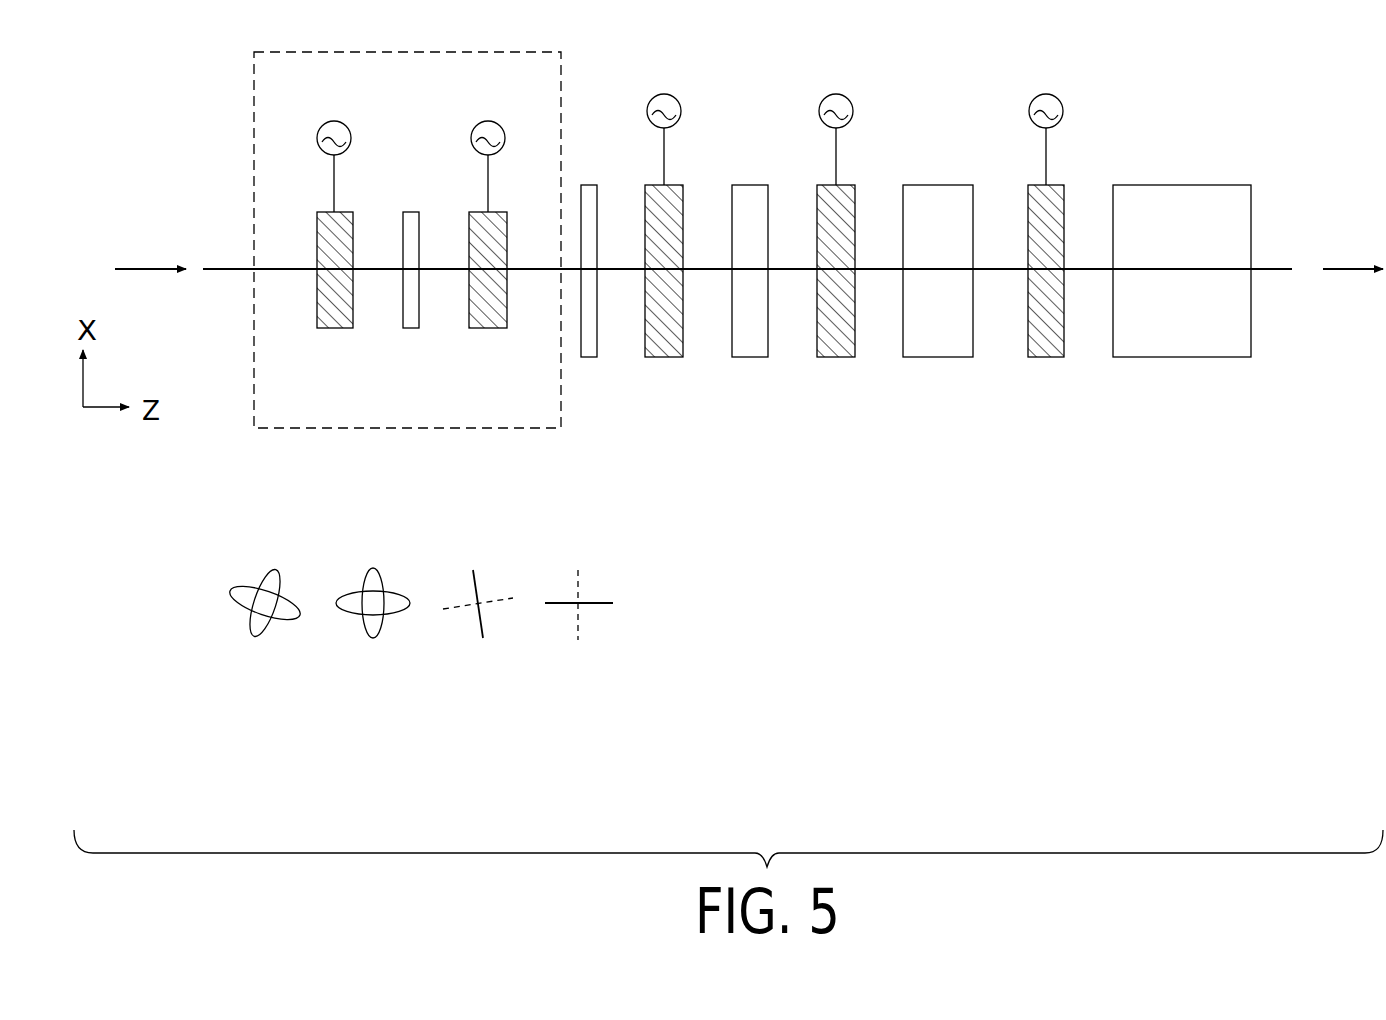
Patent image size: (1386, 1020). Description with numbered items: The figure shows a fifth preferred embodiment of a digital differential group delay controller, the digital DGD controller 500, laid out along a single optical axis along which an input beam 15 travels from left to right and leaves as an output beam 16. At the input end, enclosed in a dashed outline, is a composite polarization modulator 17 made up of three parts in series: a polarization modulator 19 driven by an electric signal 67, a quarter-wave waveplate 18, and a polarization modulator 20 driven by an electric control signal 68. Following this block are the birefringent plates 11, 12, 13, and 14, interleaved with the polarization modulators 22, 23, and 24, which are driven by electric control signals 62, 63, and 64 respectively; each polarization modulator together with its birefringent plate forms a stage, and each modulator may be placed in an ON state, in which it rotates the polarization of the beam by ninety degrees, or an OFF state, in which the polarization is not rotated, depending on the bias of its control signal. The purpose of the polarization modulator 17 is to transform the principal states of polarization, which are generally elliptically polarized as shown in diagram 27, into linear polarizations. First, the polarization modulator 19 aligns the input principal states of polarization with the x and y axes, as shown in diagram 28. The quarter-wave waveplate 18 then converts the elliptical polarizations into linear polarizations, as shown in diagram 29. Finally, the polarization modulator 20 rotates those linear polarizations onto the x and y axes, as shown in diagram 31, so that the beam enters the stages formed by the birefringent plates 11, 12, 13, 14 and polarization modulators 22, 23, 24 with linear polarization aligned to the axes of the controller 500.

The birefringent plate 11 is at (588, 183).
The birefringent plate 12 is at (750, 183).
The birefringent plate 13 is at (938, 183).
The birefringent plate 14 is at (1178, 183).
The input beam 15 is at (143, 268).
The output light 16 is at (1352, 268).
The polarization modulator 17 is at (254, 155).
The quarter-wave waveplate 18 is at (408, 210).
The polarization modulator 19 is at (335, 328).
The polarization modulator 20 is at (490, 328).
The polarization modulator 22 is at (663, 357).
The polarization modulator 23 is at (835, 357).
The polarization modulator 24 is at (1046, 357).
The diagram 27 is at (242, 640).
The diagram 28 is at (353, 640).
The diagram 29 is at (455, 640).
The diagram 31 is at (558, 640).
The electric control signal 62 is at (656, 97).
The electric control signal 63 is at (828, 97).
The electric control signal 64 is at (1038, 97).
The electric signal 67 is at (322, 126).
The electric control signal 68 is at (500, 126).
The digital DGD controller 500 is at (790, 813).